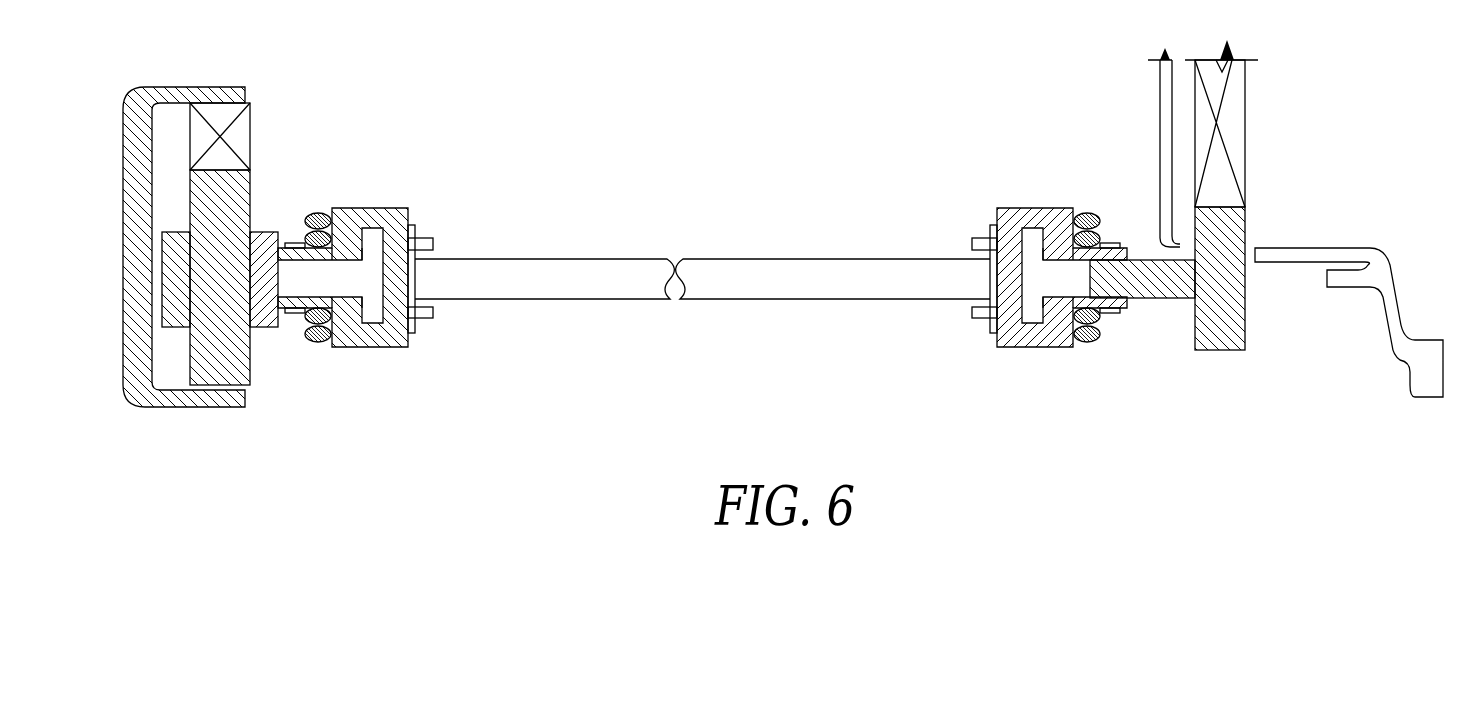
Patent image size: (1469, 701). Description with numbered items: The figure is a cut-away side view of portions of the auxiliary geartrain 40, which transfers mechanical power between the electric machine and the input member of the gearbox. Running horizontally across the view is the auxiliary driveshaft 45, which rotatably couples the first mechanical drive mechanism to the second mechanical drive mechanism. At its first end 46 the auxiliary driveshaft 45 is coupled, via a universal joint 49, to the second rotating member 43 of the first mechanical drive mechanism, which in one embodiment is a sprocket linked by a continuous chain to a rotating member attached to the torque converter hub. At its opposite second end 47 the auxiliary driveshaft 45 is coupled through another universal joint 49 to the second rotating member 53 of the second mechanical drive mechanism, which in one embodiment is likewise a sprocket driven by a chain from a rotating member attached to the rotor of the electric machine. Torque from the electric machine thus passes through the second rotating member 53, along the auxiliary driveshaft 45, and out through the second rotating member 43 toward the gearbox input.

The auxiliary geartrain 40 is at (622, 156).
The second rotating member 43 is at (1227, 323).
The auxiliary driveshaft 45 is at (793, 259).
The first end 46 is at (1137, 205).
The second end 47 is at (277, 207).
The universal joint 49 is at (360, 352).
The second rotating member 53 is at (228, 357).